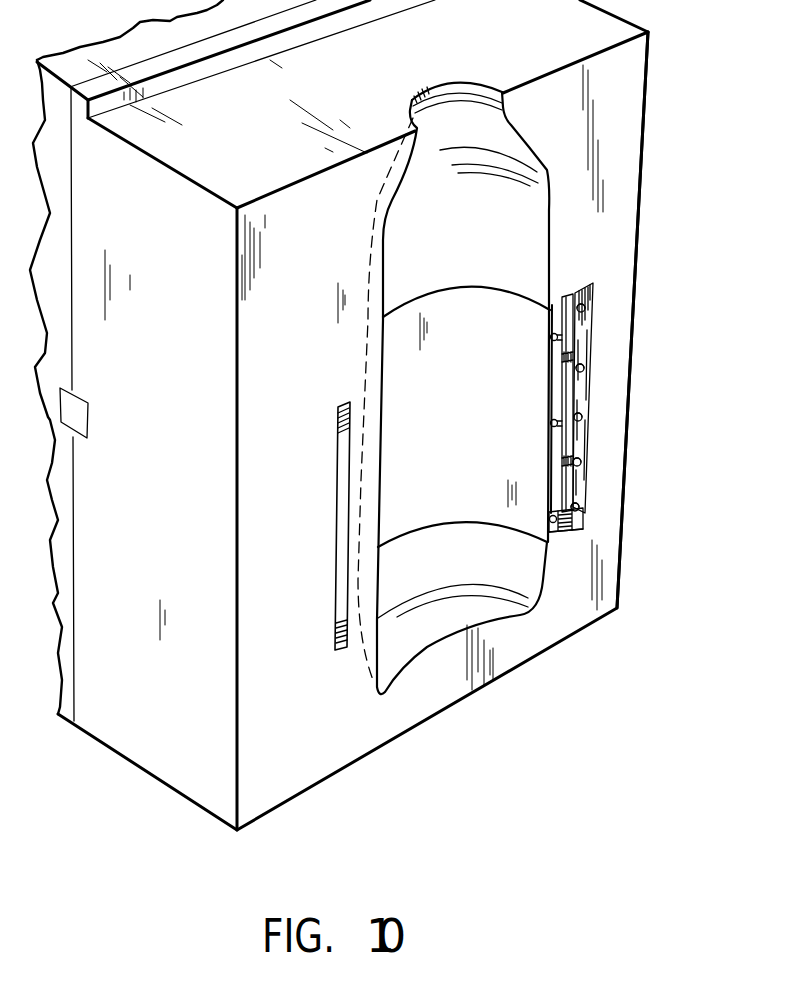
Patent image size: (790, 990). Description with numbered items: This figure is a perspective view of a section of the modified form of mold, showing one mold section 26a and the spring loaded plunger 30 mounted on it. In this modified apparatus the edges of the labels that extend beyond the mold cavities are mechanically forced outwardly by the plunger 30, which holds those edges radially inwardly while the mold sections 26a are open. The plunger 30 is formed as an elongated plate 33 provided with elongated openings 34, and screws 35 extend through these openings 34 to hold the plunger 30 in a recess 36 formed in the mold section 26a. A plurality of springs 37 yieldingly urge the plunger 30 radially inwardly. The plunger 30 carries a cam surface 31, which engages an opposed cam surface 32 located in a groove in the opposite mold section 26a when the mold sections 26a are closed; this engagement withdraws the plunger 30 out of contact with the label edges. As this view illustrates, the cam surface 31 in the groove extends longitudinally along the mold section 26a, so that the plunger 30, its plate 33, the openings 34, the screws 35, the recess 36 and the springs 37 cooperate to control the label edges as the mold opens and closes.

The mold section 26a is at (633, 183).
The spring loaded plunger 30 is at (557, 298).
The cam surface 31 is at (570, 340).
The opposed cam surface 32 is at (342, 513).
The elongated plate 33 is at (553, 531).
The elongated openings 34 is at (577, 518).
The screws 35 is at (560, 538).
The recess 36 is at (592, 300).
The springs 37 is at (582, 506).